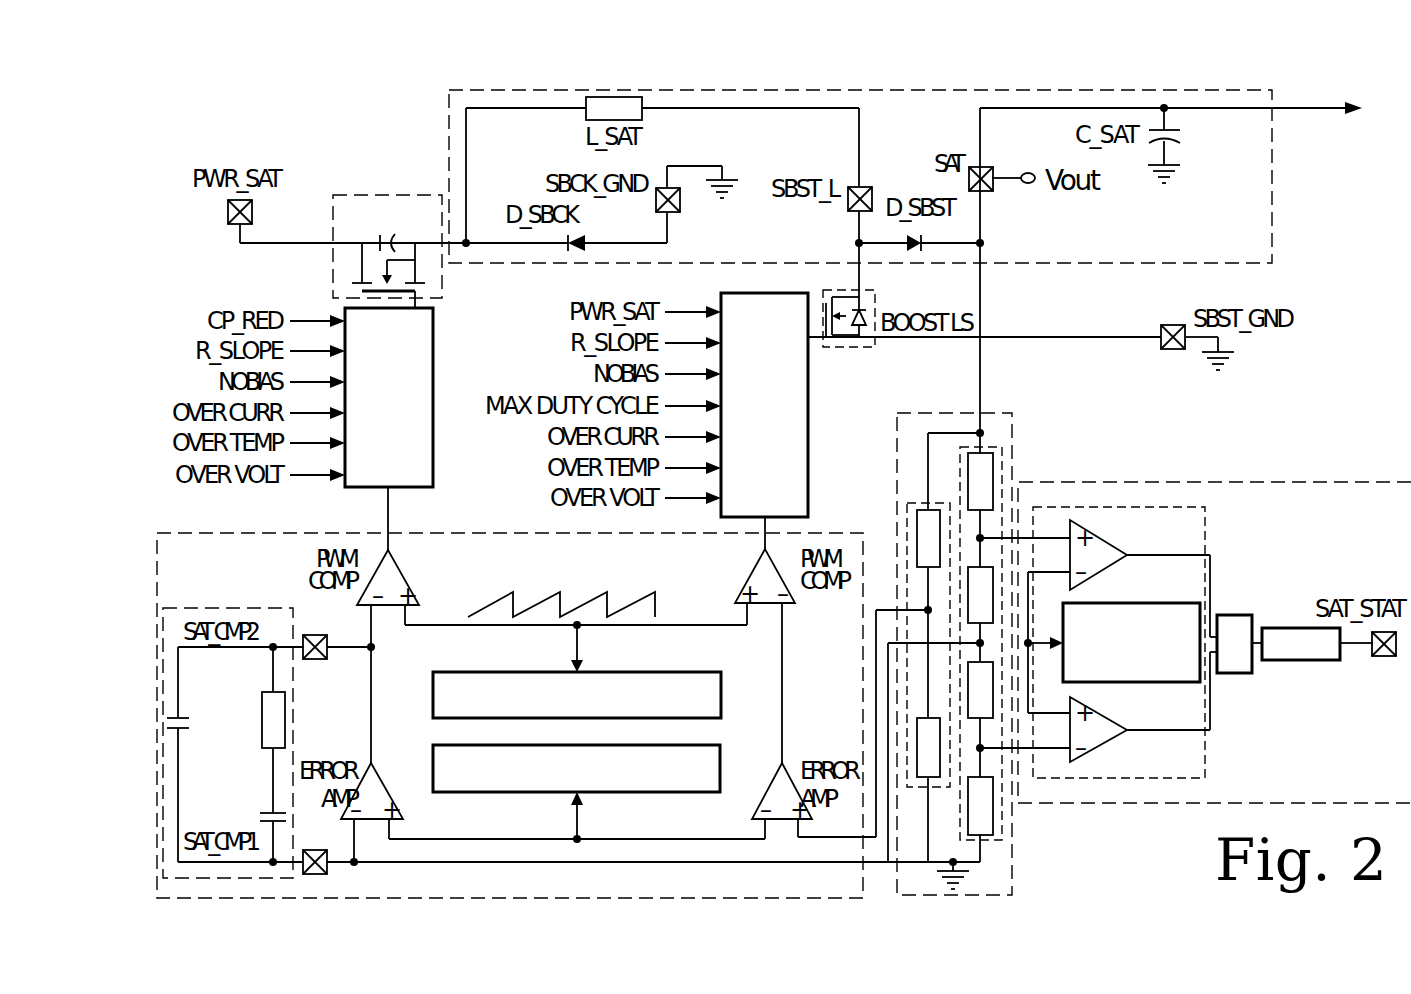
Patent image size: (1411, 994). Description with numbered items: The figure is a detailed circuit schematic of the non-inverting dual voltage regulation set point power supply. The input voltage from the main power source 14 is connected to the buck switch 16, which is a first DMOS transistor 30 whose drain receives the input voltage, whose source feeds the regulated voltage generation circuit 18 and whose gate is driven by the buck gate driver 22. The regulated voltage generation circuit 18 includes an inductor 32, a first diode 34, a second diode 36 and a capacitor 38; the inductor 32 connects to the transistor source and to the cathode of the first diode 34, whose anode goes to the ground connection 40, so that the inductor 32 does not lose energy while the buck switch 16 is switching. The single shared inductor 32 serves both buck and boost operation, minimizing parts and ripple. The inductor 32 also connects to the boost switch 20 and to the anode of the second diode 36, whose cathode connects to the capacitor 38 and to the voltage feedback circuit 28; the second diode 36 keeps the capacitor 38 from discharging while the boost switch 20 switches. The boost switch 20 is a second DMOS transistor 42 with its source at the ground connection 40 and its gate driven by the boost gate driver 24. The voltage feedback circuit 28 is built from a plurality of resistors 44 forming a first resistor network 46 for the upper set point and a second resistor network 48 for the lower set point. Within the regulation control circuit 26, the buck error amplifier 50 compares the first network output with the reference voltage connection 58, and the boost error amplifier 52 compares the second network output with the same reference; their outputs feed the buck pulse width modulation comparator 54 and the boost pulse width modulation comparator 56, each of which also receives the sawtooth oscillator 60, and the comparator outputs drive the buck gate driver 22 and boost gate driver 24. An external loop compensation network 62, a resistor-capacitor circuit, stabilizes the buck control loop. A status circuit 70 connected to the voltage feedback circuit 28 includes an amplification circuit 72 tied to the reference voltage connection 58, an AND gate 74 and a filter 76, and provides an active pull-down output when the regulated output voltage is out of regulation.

The main power source 14 is at (240, 226).
The buck switch 16 is at (360, 195).
The regulated voltage generation circuit 18 is at (1272, 175).
The boost switch 20 is at (875, 300).
The buck gate driver 22 is at (433, 343).
The boost gate driver 24 is at (810, 440).
The regulation control circuit 26 is at (445, 533).
The voltage feedback circuit 28 is at (1012, 420).
The first DMOS transistor 30 is at (382, 247).
The inductor 32 is at (643, 110).
The first diode 34 is at (585, 243).
The second diode 36 is at (915, 250).
The capacitor 38 is at (1180, 140).
The ground connection 40 is at (735, 180).
The second DMOS transistor 42 is at (843, 325).
The resistors 44 is at (985, 482).
The first resistor network 46 is at (1003, 800).
The second resistor network 48 is at (907, 503).
The buck error amplifier 50 is at (371, 822).
The boost error amplifier 52 is at (782, 822).
The buck pulse width modulation comparator 54 is at (413, 572).
The boost pulse width modulation comparator 56 is at (737, 572).
The reference voltage connection 58 is at (721, 745).
The sawtooth oscillator 60 is at (721, 672).
The external loop compensation network 62 is at (220, 608).
The status circuit 70 is at (1282, 482).
The amplification circuit 72 is at (1162, 507).
The AND gate 74 is at (1235, 615).
The filter 76 is at (1290, 628).